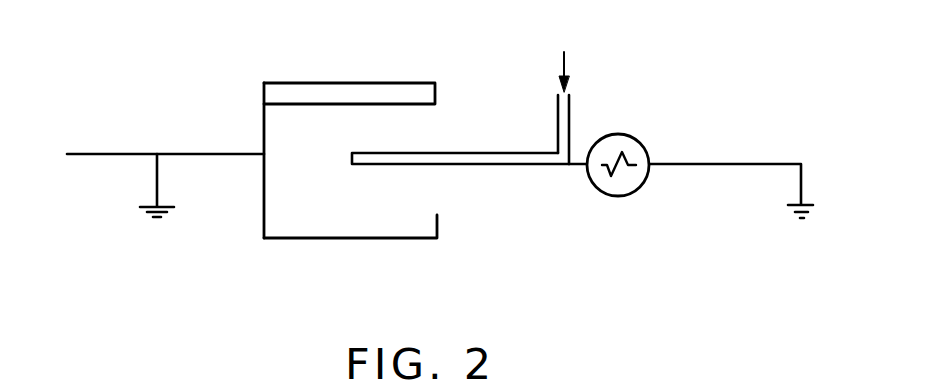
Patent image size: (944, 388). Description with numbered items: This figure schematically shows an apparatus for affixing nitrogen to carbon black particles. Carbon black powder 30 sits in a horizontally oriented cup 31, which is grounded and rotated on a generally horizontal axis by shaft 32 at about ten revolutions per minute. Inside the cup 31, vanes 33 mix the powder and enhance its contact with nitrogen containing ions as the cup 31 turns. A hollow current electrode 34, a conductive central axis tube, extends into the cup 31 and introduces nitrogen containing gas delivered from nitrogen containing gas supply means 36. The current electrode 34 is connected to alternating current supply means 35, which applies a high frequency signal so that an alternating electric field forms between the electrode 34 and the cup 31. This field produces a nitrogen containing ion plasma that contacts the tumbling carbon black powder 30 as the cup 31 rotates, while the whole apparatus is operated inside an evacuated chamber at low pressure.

The carbon black powder 30 is at (376, 187).
The cup 31 is at (412, 238).
The shaft 32 is at (228, 155).
The vanes 33 is at (423, 107).
The hollow current electrode 34 is at (508, 153).
The alternating current supply means 35 is at (641, 139).
The nitrogen containing gas supply means 36 is at (565, 63).